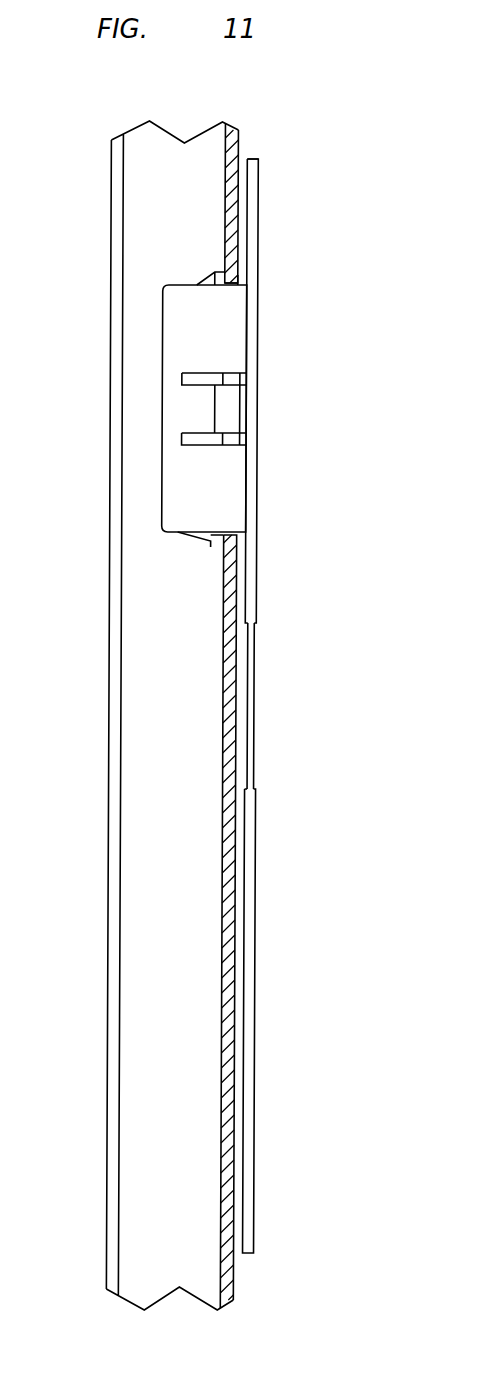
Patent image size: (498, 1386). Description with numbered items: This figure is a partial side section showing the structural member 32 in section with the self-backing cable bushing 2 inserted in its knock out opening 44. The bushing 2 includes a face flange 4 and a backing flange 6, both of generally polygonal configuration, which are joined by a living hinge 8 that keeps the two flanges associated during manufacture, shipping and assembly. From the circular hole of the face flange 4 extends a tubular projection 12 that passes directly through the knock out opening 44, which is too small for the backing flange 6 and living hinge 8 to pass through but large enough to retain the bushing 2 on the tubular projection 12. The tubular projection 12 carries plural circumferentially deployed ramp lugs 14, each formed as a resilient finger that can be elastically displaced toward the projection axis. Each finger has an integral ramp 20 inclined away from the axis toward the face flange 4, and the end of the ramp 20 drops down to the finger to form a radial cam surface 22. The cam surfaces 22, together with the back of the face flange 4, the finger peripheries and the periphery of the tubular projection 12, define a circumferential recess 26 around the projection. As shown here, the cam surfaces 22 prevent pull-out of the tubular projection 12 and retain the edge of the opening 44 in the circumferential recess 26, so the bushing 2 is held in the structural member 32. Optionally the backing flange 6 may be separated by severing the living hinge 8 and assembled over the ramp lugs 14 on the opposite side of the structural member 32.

The self-backing cable bushing 2 is at (288, 422).
The face flange 4 is at (252, 177).
The backing flange 6 is at (258, 893).
The living hinge 8 is at (258, 708).
The tubular projection 12 is at (178, 412).
The ramp lugs 14 is at (193, 385).
The ramp 20 is at (205, 284).
The radial cam surface 22 is at (216, 275).
The circumferential recess 26 is at (238, 284).
The structural member 32 is at (228, 130).
The knock out opening 44 is at (236, 282).